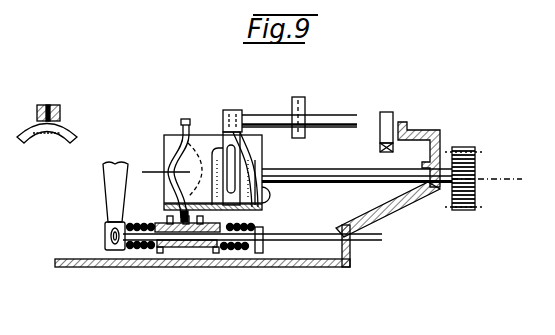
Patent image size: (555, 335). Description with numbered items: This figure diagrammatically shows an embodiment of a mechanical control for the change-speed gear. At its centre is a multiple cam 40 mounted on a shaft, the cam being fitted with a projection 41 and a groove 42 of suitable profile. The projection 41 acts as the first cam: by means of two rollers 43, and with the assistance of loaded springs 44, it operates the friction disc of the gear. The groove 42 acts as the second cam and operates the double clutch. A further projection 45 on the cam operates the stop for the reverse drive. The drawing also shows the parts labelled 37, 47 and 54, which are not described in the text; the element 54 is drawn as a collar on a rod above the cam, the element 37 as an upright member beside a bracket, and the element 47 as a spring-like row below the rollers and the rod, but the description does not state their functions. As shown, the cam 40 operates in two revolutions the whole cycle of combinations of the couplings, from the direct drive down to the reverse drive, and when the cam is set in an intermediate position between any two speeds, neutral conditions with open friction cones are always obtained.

The lever 37 is at (397, 101).
The multiple cam 40 is at (201, 140).
The projection 41 is at (181, 125).
The groove 42 is at (253, 158).
The rollers 43 is at (160, 222).
The springs 44 is at (241, 253).
The projection 45 is at (272, 197).
The spring 47 is at (135, 251).
The collar 54 is at (305, 109).